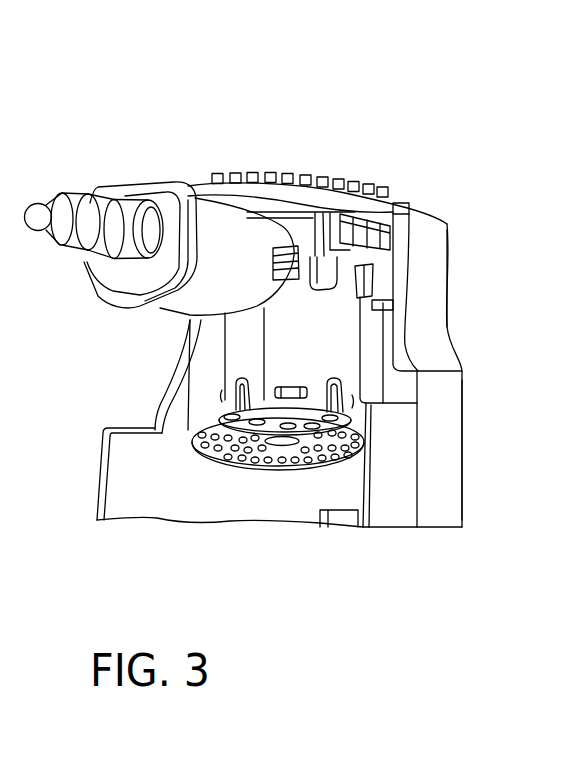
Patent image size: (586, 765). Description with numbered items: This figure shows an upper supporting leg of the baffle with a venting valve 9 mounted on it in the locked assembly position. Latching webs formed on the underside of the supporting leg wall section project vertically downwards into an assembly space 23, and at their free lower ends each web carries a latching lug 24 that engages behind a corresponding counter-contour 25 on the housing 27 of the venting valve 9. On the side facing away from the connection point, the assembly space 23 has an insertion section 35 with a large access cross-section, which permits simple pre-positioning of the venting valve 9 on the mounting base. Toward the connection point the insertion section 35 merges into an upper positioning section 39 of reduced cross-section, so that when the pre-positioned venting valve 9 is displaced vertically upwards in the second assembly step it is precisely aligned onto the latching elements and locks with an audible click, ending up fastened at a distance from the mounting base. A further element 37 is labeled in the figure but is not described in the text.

The venting valve 9 is at (132, 186).
The assembly space 23 is at (242, 493).
The latching lug 24 is at (330, 277).
The counter-contour 25 is at (347, 246).
The housing 27 is at (203, 393).
The insertion section 35 is at (472, 375).
The side wall 37 is at (173, 370).
The positioning section 39 is at (472, 225).